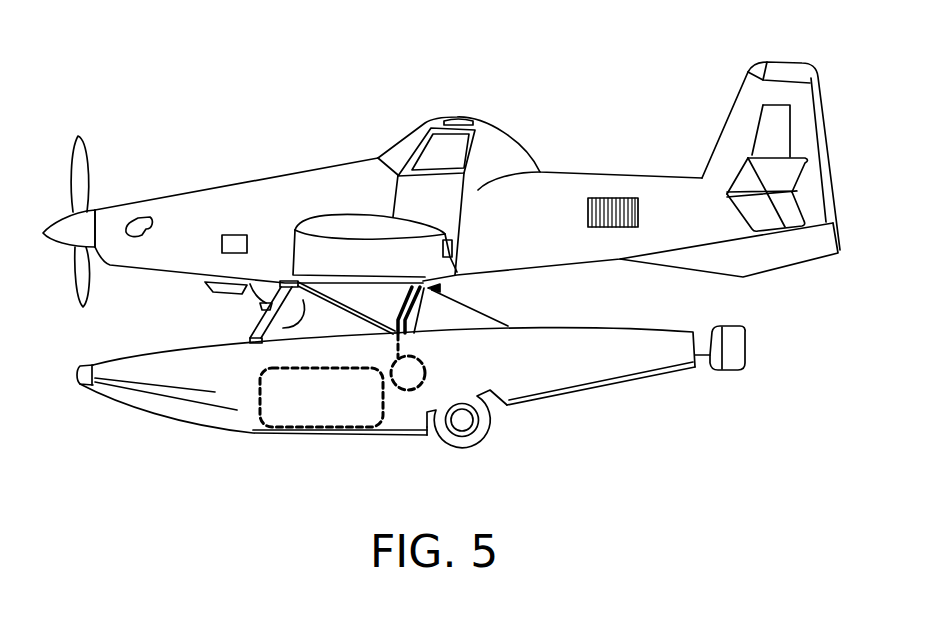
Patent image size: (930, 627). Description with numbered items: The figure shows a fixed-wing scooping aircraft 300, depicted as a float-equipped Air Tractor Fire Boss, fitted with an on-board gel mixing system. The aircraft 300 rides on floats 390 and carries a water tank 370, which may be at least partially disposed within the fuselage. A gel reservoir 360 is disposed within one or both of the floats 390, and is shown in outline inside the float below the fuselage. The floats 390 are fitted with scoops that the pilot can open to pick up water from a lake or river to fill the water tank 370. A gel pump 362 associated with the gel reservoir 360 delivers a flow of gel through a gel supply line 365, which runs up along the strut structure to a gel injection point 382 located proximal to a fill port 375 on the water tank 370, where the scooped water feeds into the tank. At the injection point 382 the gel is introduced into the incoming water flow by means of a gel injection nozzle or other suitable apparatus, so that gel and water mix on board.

The aircraft 300 is at (487, 90).
The gel reservoir 360 is at (327, 412).
The gel pump 362 is at (410, 375).
The gel supply line 365 is at (403, 338).
The water tank 370 is at (262, 321).
The fill port 375 is at (438, 288).
The gel injection point 382 is at (432, 290).
The floats 390 is at (122, 406).